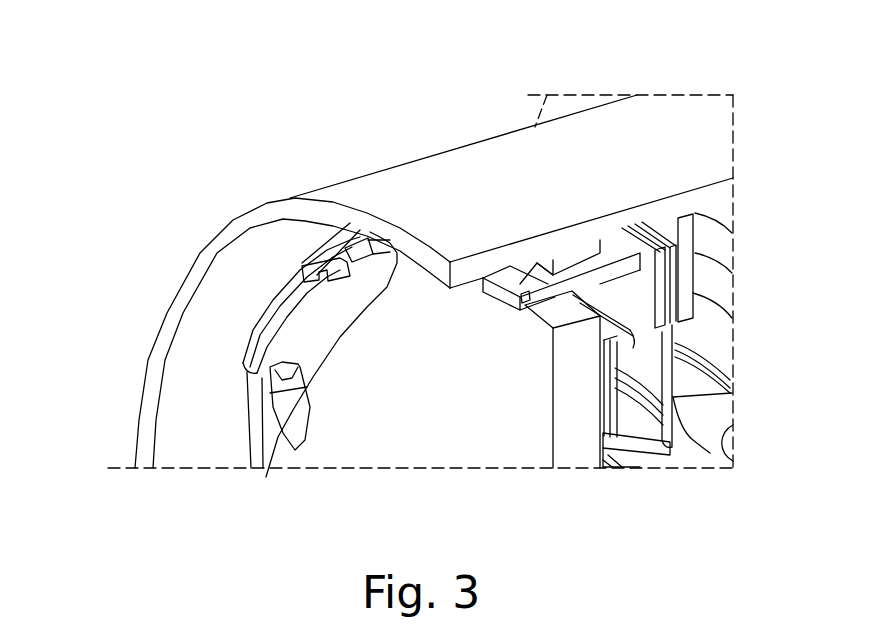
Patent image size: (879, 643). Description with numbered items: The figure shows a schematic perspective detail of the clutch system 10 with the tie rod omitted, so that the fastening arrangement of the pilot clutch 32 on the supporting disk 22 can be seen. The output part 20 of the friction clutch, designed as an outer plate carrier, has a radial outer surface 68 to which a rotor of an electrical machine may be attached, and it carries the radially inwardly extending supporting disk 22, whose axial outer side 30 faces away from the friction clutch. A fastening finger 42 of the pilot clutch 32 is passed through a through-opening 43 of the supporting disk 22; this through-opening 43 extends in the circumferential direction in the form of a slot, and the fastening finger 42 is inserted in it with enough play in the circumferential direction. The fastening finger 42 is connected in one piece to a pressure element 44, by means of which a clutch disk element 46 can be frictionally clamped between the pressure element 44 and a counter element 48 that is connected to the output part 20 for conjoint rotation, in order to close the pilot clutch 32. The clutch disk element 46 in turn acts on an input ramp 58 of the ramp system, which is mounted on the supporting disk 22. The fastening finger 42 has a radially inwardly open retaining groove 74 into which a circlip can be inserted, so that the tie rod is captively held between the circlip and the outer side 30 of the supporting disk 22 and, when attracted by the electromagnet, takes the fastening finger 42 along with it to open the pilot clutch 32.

The clutch system 10 is at (281, 255).
The output part 20 is at (722, 193).
The supporting disk 22 is at (573, 425).
The axial outer side 30 is at (463, 442).
The pilot clutch 32 is at (550, 171).
The fastening finger 42 is at (281, 195).
The through-opening 43 is at (164, 413).
The pressure element 44 is at (632, 333).
The clutch disk element 46 is at (668, 293).
The counter element 48 is at (688, 261).
The input ramp 58 is at (720, 412).
The radial outer surface 68 is at (659, 123).
The retaining groove 74 is at (381, 320).